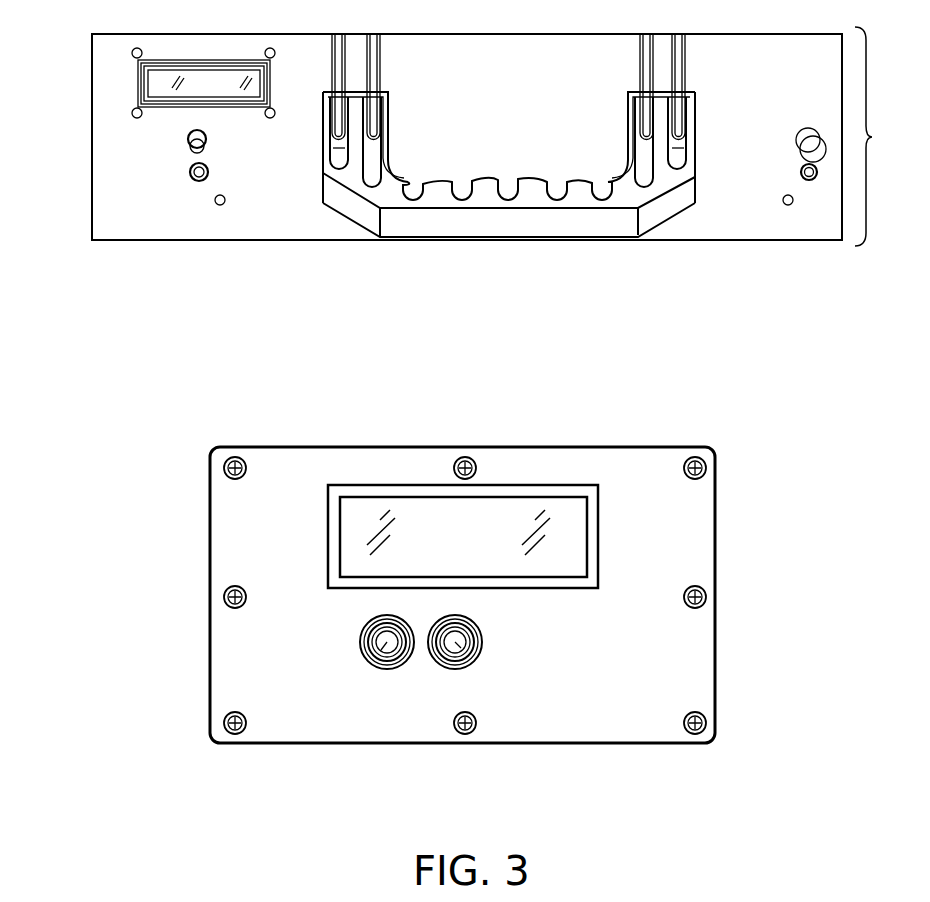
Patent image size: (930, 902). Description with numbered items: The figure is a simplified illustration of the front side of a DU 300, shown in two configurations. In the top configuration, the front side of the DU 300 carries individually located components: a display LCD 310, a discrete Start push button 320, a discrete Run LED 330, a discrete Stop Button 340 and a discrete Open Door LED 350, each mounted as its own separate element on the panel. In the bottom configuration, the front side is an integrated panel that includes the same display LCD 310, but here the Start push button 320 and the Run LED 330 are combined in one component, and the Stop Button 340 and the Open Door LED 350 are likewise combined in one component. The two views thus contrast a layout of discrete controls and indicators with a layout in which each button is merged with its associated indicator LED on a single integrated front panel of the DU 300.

The DU 300 is at (506, 136).
The display LCD 310 is at (140, 76).
The Start push button 320 is at (191, 139).
The Run LED 330 is at (193, 171).
The Stop Button 340 is at (800, 147).
The Open Door LED 350 is at (809, 181).